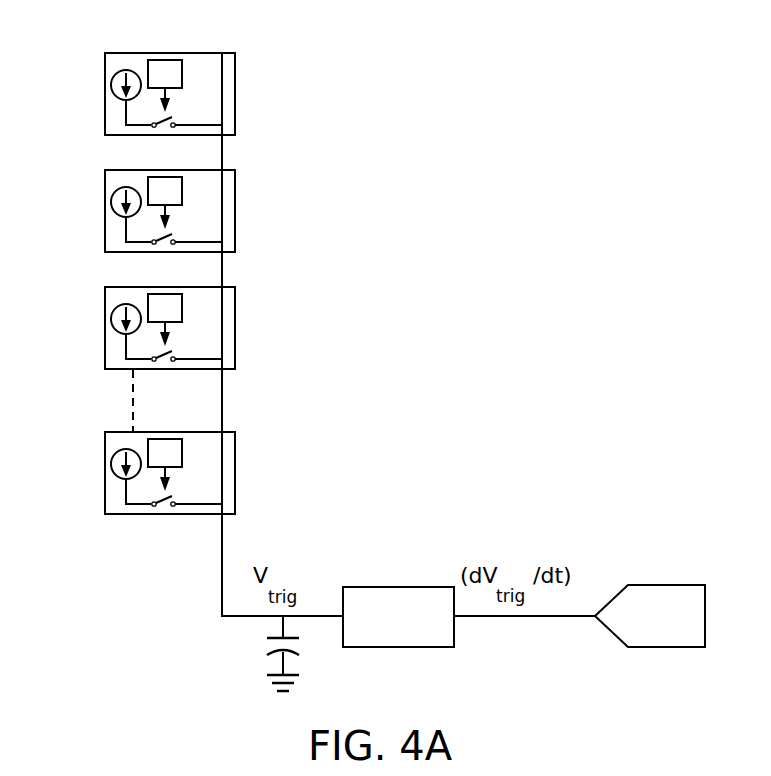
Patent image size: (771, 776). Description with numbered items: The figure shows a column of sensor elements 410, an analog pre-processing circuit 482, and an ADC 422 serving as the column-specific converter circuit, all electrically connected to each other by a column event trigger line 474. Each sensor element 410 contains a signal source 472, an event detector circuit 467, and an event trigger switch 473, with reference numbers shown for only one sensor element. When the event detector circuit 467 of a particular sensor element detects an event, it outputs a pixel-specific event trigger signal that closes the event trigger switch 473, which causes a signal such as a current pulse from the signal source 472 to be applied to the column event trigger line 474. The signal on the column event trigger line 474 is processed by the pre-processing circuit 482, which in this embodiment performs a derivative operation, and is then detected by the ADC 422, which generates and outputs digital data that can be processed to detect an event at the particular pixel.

The sensor element 410 is at (131, 257).
The event detector circuit 467 is at (165, 58).
The signal source 472 is at (112, 72).
The event trigger switch 473 is at (160, 128).
The column event trigger line 474 is at (222, 586).
The analog pre-processing circuit 482 is at (397, 647).
The ADC 422 is at (666, 647).